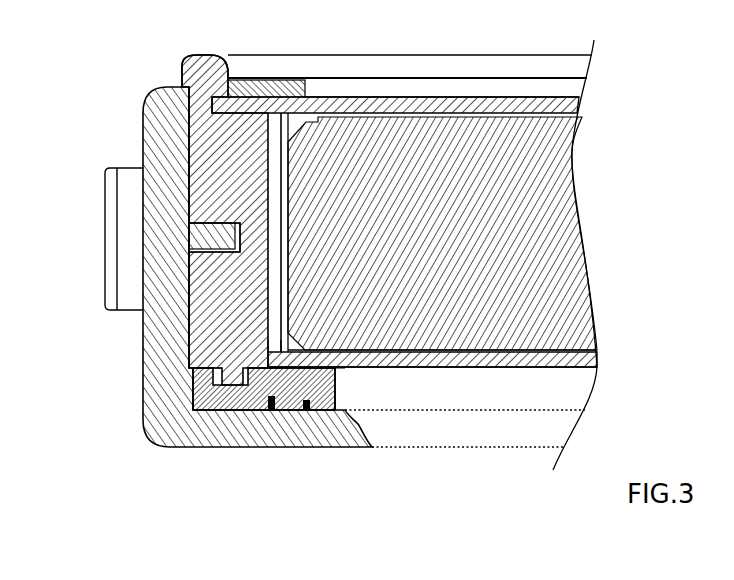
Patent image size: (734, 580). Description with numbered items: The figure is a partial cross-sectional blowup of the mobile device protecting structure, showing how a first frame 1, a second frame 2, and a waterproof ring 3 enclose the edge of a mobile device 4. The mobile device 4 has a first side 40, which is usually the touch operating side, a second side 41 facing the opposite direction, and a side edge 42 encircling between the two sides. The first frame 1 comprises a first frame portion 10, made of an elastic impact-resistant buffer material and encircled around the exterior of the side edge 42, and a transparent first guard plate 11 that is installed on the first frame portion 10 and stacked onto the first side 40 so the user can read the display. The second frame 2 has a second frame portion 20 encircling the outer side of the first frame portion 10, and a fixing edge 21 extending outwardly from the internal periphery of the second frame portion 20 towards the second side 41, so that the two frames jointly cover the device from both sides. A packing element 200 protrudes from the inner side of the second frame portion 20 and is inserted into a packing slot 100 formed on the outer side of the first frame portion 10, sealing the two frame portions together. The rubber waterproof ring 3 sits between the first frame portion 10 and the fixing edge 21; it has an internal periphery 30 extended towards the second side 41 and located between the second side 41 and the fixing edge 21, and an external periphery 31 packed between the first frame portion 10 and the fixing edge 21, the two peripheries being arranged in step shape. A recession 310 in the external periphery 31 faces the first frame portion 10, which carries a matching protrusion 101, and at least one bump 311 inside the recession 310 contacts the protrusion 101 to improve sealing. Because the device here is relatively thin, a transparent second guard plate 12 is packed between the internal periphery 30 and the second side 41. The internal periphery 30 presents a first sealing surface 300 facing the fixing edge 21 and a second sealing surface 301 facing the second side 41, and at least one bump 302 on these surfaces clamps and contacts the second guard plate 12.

The first frame 1 is at (181, 67).
The second frame 2 is at (140, 354).
The waterproof ring 3 is at (312, 489).
The mobile device 4 is at (565, 160).
The first frame portion 10 is at (188, 283).
The first guard plate 11 is at (417, 100).
The second guard plate 12 is at (540, 368).
The second frame portion 20 is at (170, 342).
The fixing edge 21 is at (347, 420).
The internal periphery 30 is at (284, 404).
The external periphery 31 is at (233, 402).
The first side 40 is at (482, 112).
The second side 41 is at (477, 368).
The side edge 42 is at (286, 210).
The packing slot 100 is at (232, 218).
The protrusion 101 is at (182, 378).
The packing element 200 is at (143, 195).
The first sealing surface 300 is at (322, 404).
The second sealing surface 301 is at (342, 372).
The bump 302 is at (340, 398).
The recession 310 is at (193, 409).
The bump 311 is at (188, 418).